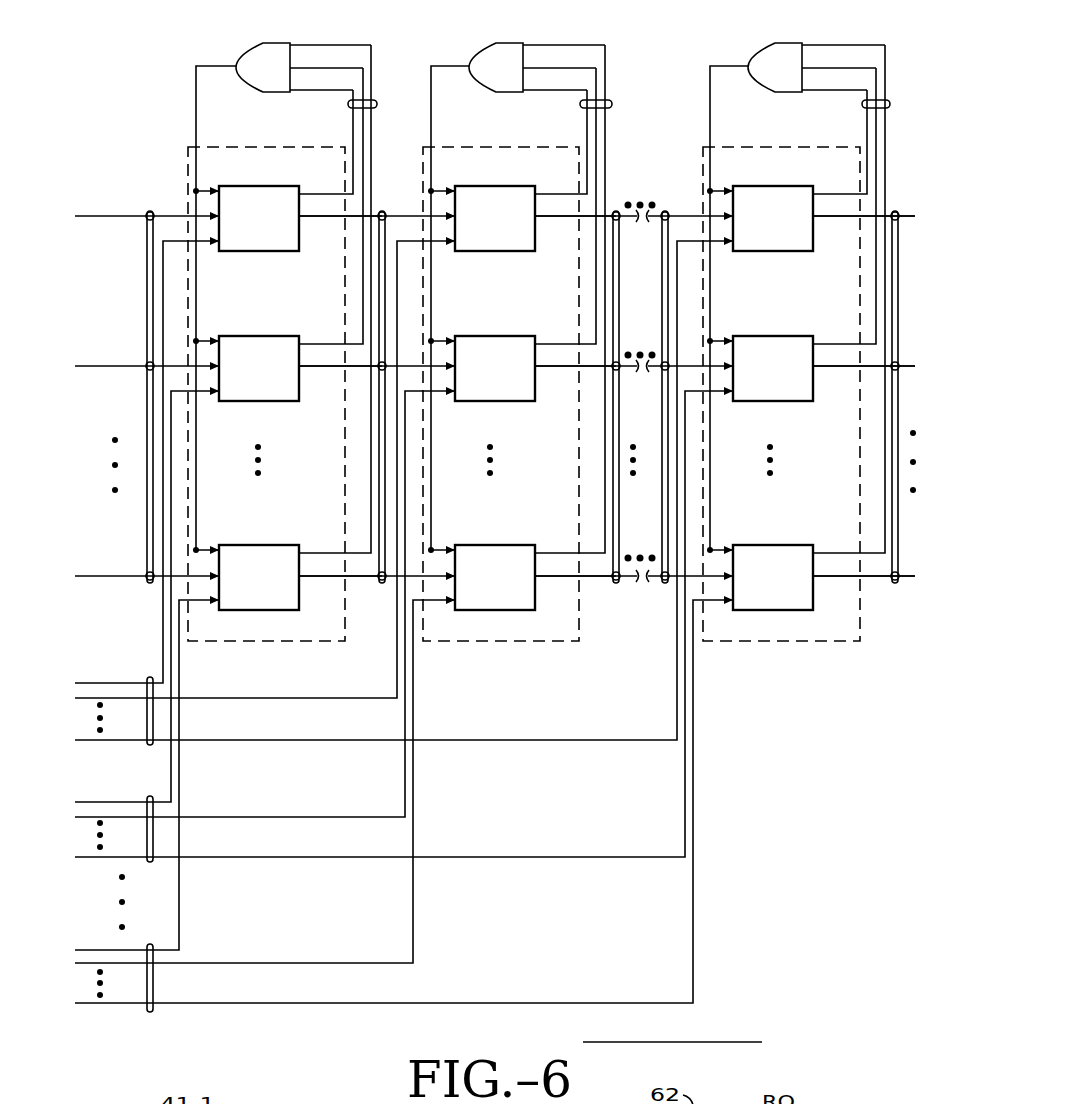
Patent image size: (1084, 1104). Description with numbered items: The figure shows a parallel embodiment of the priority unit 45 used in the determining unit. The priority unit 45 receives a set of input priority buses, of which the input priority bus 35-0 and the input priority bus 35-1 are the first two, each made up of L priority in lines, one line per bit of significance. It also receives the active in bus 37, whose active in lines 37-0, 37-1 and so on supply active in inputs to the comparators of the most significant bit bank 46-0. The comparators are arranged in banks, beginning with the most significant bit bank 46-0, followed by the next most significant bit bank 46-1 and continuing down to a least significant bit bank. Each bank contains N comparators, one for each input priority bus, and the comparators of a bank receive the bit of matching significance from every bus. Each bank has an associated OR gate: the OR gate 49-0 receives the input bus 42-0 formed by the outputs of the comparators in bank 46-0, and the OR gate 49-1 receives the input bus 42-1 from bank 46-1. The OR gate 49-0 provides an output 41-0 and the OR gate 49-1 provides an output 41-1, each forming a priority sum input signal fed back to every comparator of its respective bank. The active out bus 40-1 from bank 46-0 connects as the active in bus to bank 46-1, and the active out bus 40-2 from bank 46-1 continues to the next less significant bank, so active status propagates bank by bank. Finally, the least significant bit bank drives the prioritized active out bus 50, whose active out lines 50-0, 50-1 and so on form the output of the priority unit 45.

The active in bus 37 is at (150, 210).
The active in line 37-0 is at (171, 212).
The active in line 37-1 is at (137, 365).
The input priority bus 35-0 is at (150, 677).
The input priority bus 35-1 is at (150, 797).
The OR gate output 41-0 is at (196, 75).
The OR gate output 41-1 is at (448, 67).
The OR gate 49-0 is at (272, 43).
The OR gate 49-1 is at (503, 43).
The OR gate input bus 42-0 is at (348, 104).
The OR gate input bus 42-1 is at (580, 107).
The active out/active in bus 40-1 is at (382, 213).
The active out bus 40-2 is at (617, 212).
The most significant bit bank 46-0 is at (280, 642).
The next most significant bit bank 46-1 is at (518, 643).
The prioritized active out bus 50 is at (895, 584).
The active out line 50-0 is at (846, 218).
The active out line 50-1 is at (846, 368).
The priority unit 45 is at (742, 851).